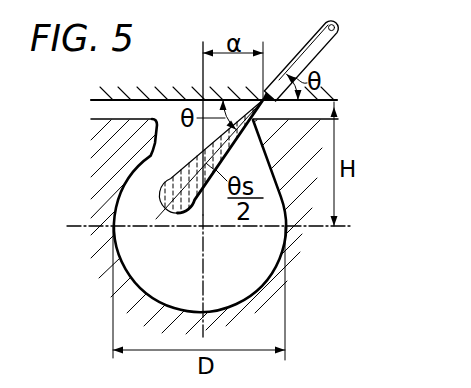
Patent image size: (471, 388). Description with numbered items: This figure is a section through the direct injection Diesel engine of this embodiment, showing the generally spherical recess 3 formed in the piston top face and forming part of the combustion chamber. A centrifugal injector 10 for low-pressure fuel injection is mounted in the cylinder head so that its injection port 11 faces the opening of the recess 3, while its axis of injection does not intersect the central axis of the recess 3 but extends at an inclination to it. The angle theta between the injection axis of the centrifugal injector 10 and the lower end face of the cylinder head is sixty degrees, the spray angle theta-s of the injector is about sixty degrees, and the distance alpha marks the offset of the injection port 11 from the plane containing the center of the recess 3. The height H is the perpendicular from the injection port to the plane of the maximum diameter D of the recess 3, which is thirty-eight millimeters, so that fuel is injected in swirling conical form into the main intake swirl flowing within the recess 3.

The recess 3 is at (265, 185).
The centrifugal injector 10 is at (318, 47).
The injection port 11 is at (259, 98).